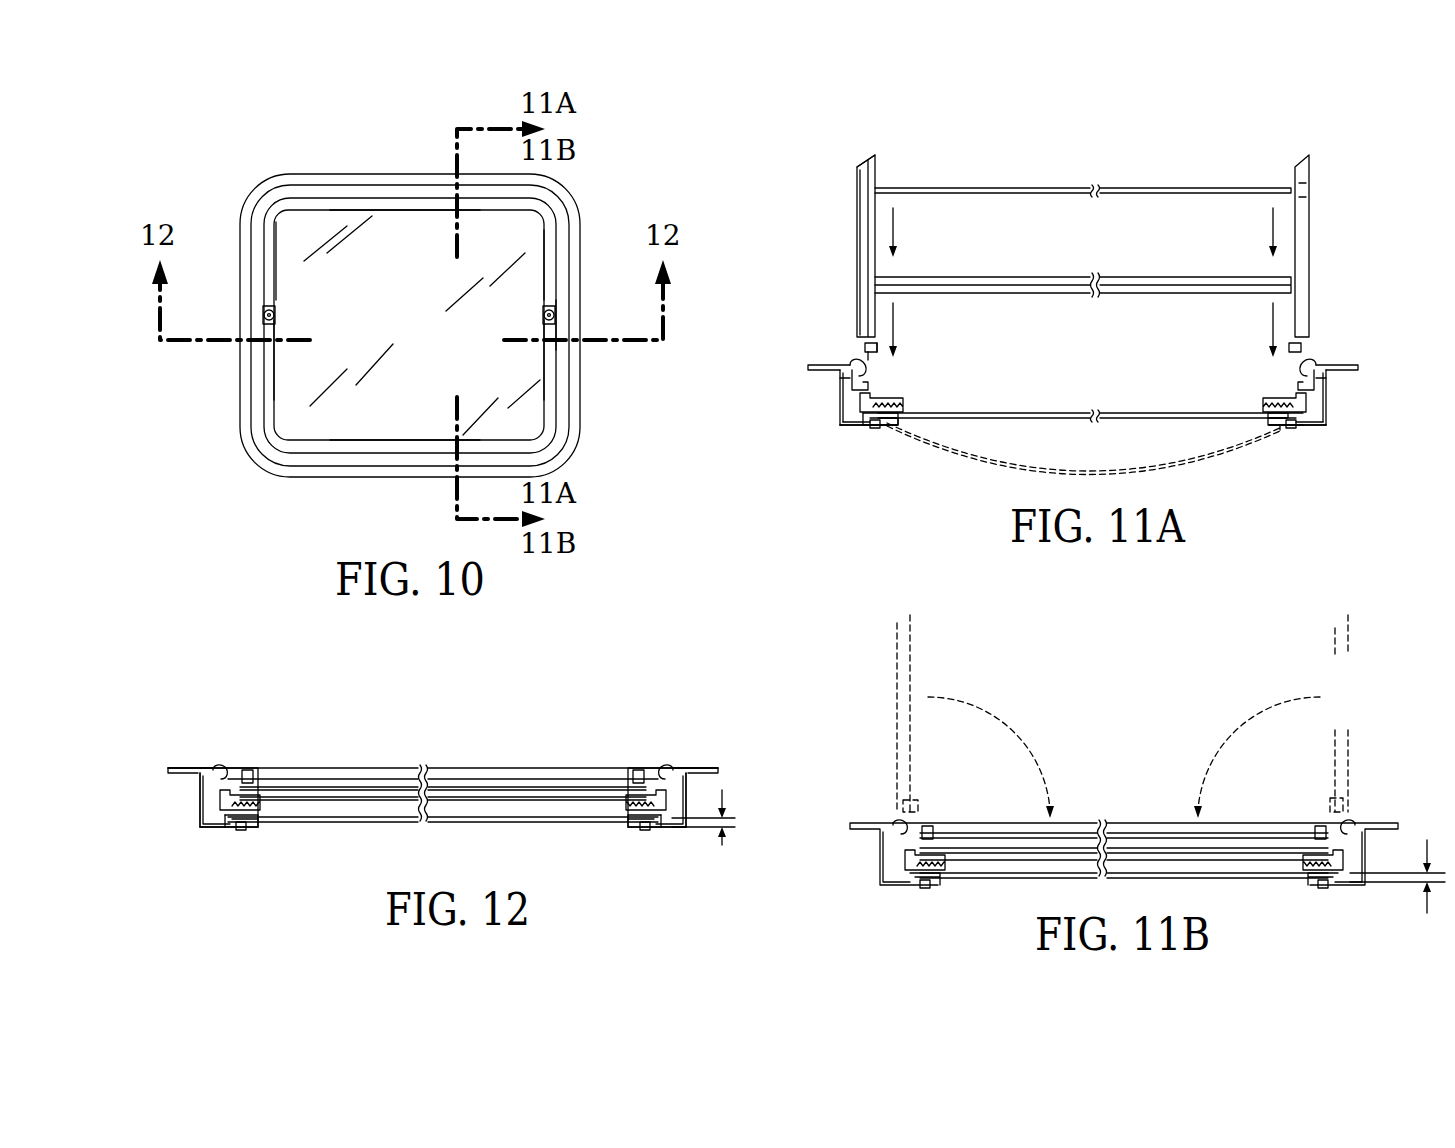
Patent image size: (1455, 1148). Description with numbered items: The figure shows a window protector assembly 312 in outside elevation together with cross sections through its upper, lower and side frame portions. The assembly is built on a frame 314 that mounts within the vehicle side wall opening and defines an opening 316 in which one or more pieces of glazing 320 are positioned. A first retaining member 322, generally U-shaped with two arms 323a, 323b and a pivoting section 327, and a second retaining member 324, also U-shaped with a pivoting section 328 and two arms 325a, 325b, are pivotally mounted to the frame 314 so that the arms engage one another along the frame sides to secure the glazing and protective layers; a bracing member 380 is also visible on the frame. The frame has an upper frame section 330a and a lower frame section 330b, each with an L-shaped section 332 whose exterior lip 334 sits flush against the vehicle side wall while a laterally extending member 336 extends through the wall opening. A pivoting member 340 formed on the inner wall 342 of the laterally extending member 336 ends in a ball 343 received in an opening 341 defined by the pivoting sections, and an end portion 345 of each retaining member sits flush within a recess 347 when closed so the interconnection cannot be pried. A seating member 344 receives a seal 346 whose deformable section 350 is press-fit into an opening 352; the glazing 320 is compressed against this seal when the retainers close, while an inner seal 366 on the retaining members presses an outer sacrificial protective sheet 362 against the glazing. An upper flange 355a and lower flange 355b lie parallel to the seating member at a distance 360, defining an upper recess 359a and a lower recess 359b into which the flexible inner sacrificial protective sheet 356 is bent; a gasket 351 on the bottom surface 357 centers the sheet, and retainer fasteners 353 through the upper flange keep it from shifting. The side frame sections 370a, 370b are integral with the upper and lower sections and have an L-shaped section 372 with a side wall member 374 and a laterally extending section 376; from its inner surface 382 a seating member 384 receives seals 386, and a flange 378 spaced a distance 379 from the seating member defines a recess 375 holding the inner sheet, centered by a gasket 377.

In FIG. 10, the window protector assembly 312 is at (218, 478).
In FIG. 10, the frame 314 is at (340, 180).
In FIG. 11A, the frame 314 is at (833, 412).
In FIG. 10, the opening 316 is at (298, 230).
In FIG. 10, the glazing 320 is at (406, 297).
In FIG. 11A, the glazing 320 is at (1128, 273).
In FIG. 10, the first retaining member 322 is at (300, 444).
In FIG. 11A, the first retaining member 322 is at (853, 238).
In FIG. 10, the arm 323a is at (270, 384).
In FIG. 11A, the arm 323a is at (866, 162).
In FIG. 10, the arm 323b is at (544, 378).
In FIG. 10, the second retaining member 324 is at (551, 230).
In FIG. 11A, the second retaining member 324 is at (1313, 237).
In FIG. 10, the arm 325a is at (268, 266).
In FIG. 10, the arm 325b is at (550, 268).
In FIG. 10, the pivoting section 327 is at (352, 441).
In FIG. 10, the pivoting section 328 is at (405, 205).
In FIG. 11A, the upper frame section 330a is at (1314, 408).
In FIG. 11A, the lower frame section 330b is at (1083, 401).
In FIG. 11A, the L-shaped section 332 is at (840, 398).
In FIG. 11A, the exterior lip 334 is at (808, 367).
In FIG. 11A, the laterally extending member 336 is at (840, 420).
In FIG. 11A, the pivoting member 340 is at (850, 364).
In FIG. 11B, the opening 341 is at (908, 832).
In FIG. 11A, the inner wall 342 is at (870, 380).
In FIG. 11A, the ball 343 is at (880, 358).
In FIG. 11A, the seating member 344 is at (903, 416).
In FIG. 11A, the end portion 345 is at (885, 372).
In FIG. 11A, the seal 346 is at (898, 406).
In FIG. 11A, the recess 347 is at (840, 379).
In FIG. 11A, the deformable section 350 is at (863, 430).
In FIG. 11A, the gasket 351 is at (880, 426).
In FIG. 11A, the opening 352 is at (843, 426).
In FIG. 11A, the retainer fastener 353 is at (1282, 430).
In FIG. 11A, the upper flange 355a is at (1278, 430).
In FIG. 11A, the lower flange 355b is at (888, 430).
In FIG. 11A, the inner sacrificial protective sheet 356 is at (1123, 424).
In FIG. 11B, the bottom surface 357 is at (907, 873).
In FIG. 11B, the upper recess 359a is at (1335, 880).
In FIG. 11B, the lower recess 359b is at (910, 884).
In FIG. 11B, the distance 360 is at (1400, 889).
In FIG. 11A, the outer sacrificial protective sheet 362 is at (1042, 188).
In FIG. 11A, the inner seal 366 is at (878, 343).
In FIG. 11B, the inner seal 366 is at (937, 838).
In FIG. 12, the side frame section 370a is at (232, 865).
In FIG. 12, the side frame section 370b is at (657, 864).
In FIG. 12, the L-shaped section 372 is at (196, 800).
In FIG. 12, the side wall member 374 is at (191, 763).
In FIG. 12, the recess 375 is at (258, 823).
In FIG. 12, the laterally extending section 376 is at (200, 820).
In FIG. 12, the gasket 377 is at (228, 828).
In FIG. 12, the flange 378 is at (245, 831).
In FIG. 12, the distance 379 is at (706, 845).
In FIG. 10, the bracing member 380 is at (262, 312).
In FIG. 12, the inner surface 382 is at (250, 785).
In FIG. 12, the seating member 384 is at (595, 822).
In FIG. 12, the seal 386 is at (258, 806).